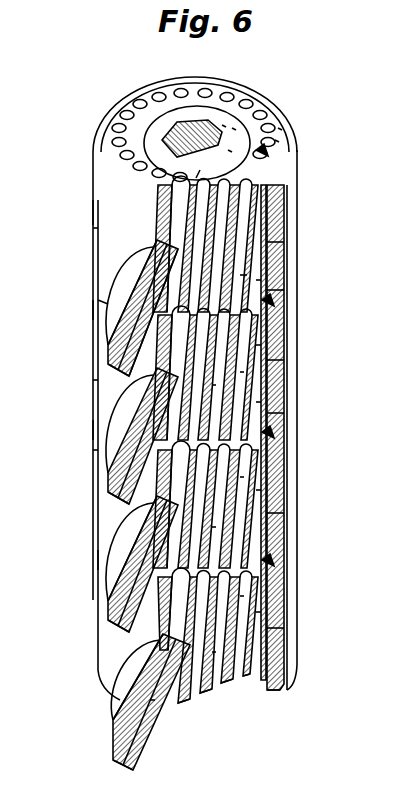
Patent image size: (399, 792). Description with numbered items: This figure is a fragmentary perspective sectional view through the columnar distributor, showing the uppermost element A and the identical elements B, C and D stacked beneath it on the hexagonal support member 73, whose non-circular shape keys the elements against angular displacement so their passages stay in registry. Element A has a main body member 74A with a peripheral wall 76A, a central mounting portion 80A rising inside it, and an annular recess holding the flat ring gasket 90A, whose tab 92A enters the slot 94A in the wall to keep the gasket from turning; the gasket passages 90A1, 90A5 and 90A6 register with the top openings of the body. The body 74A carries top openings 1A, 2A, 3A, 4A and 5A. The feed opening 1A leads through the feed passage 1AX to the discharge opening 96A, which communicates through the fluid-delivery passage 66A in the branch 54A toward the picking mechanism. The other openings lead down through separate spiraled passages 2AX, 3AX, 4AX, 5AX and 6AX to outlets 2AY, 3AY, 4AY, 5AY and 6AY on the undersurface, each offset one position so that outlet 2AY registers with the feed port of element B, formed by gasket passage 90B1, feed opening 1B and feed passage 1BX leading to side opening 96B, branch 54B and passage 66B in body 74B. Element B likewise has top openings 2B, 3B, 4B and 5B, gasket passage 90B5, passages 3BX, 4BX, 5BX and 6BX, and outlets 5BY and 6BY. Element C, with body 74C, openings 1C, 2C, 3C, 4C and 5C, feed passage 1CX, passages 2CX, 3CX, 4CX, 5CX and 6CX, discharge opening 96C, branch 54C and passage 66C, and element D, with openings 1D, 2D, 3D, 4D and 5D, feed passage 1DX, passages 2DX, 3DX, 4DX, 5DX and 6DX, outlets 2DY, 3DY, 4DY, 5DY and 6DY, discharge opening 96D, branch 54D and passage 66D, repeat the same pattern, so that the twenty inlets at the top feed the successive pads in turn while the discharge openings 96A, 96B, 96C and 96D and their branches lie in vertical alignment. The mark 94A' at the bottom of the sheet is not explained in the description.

The central mounting portion 80A is at (220, 112).
The tab 92A is at (234, 86).
The slot 94A is at (200, 118).
The gasket member passage 90A1 is at (192, 138).
The support member 73 is at (240, 118).
The gasket member 90A is at (278, 128).
The gasket member passage 90A6 is at (275, 140).
The gasket member passage 90A5 is at (262, 153).
The top opening 4A is at (234, 130).
The top opening 3A is at (232, 147).
The top opening 2A is at (204, 167).
The peripheral wall 76A is at (100, 128).
The top opening 5A is at (287, 170).
The feed opening 1A is at (175, 199).
The feed passage 1AX is at (176, 217).
The passage 2AX is at (202, 201).
The passage 3AX is at (220, 212).
The passage 4AX is at (238, 222).
The passage 5AX is at (255, 236).
The passage 6AX is at (272, 242).
The outlet 4AY is at (245, 275).
The outlet 5AY is at (258, 280).
The outlet 6AY is at (270, 290).
The discharge opening 96A is at (160, 243).
The branch 54A is at (110, 341).
The fluid-delivery passage 66A is at (112, 362).
The outlet 2AY is at (150, 285).
The outlet 3AY is at (156, 312).
The uppermost element A is at (90, 214).
The main body member 74A is at (96, 230).
The feed opening 1B is at (202, 373).
The top opening 2B is at (196, 377).
The top opening 3B is at (216, 377).
The top opening 4B is at (268, 328).
The gasket member passage 90B5 is at (268, 303).
The top opening 5B is at (290, 320).
The passage 5BX is at (252, 345).
The passage 6BX is at (272, 360).
The passage 4BX is at (245, 372).
The passage 3BX is at (218, 385).
The outlet 5BY is at (262, 402).
The outlet 6BY is at (272, 413).
The gasket member passage 90B1 is at (105, 301).
The element B is at (90, 312).
The feed passage 1BX is at (177, 367).
The side opening 96B is at (158, 382).
The body member 74B is at (100, 382).
The branch 54B is at (112, 478).
The branch passage 66B is at (112, 493).
The feed opening 1C is at (202, 504).
The top opening 2C is at (196, 509).
The top opening 3C is at (216, 509).
The top opening 4C is at (268, 450).
The top opening 5C is at (290, 440).
The passage 4CX is at (245, 477).
The passage 5CX is at (258, 490).
The passage 6CX is at (272, 513).
The passage 3CX is at (218, 527).
The element C is at (90, 431).
The body member 74C is at (100, 452).
The feed passage 1CX is at (177, 498).
The discharge opening 96C is at (160, 510).
The passage 2CX is at (160, 530).
The branch 54C is at (113, 594).
The branch passage 66C is at (113, 620).
The feed opening 1D is at (205, 609).
The top opening 2D is at (197, 640).
The top opening 3D is at (219, 635).
The top opening 4D is at (268, 566).
The top opening 5D is at (290, 558).
The passage 4DX is at (245, 596).
The passage 5DX is at (258, 612).
The passage 6DX is at (272, 628).
The passage 3DX is at (218, 652).
The element D is at (95, 561).
The feed passage 1DX is at (180, 624).
The discharge opening 96D is at (165, 642).
The branch 54D is at (125, 697).
The branch passage 66D is at (114, 744).
The passage 2DX is at (172, 740).
The outlet 2DY is at (185, 706).
The outlet 3DY is at (205, 695).
The outlet 4DY is at (228, 686).
The outlet 5DY is at (248, 680).
The outlet 6DY is at (268, 692).
The holes lower 94A' is at (204, 745).